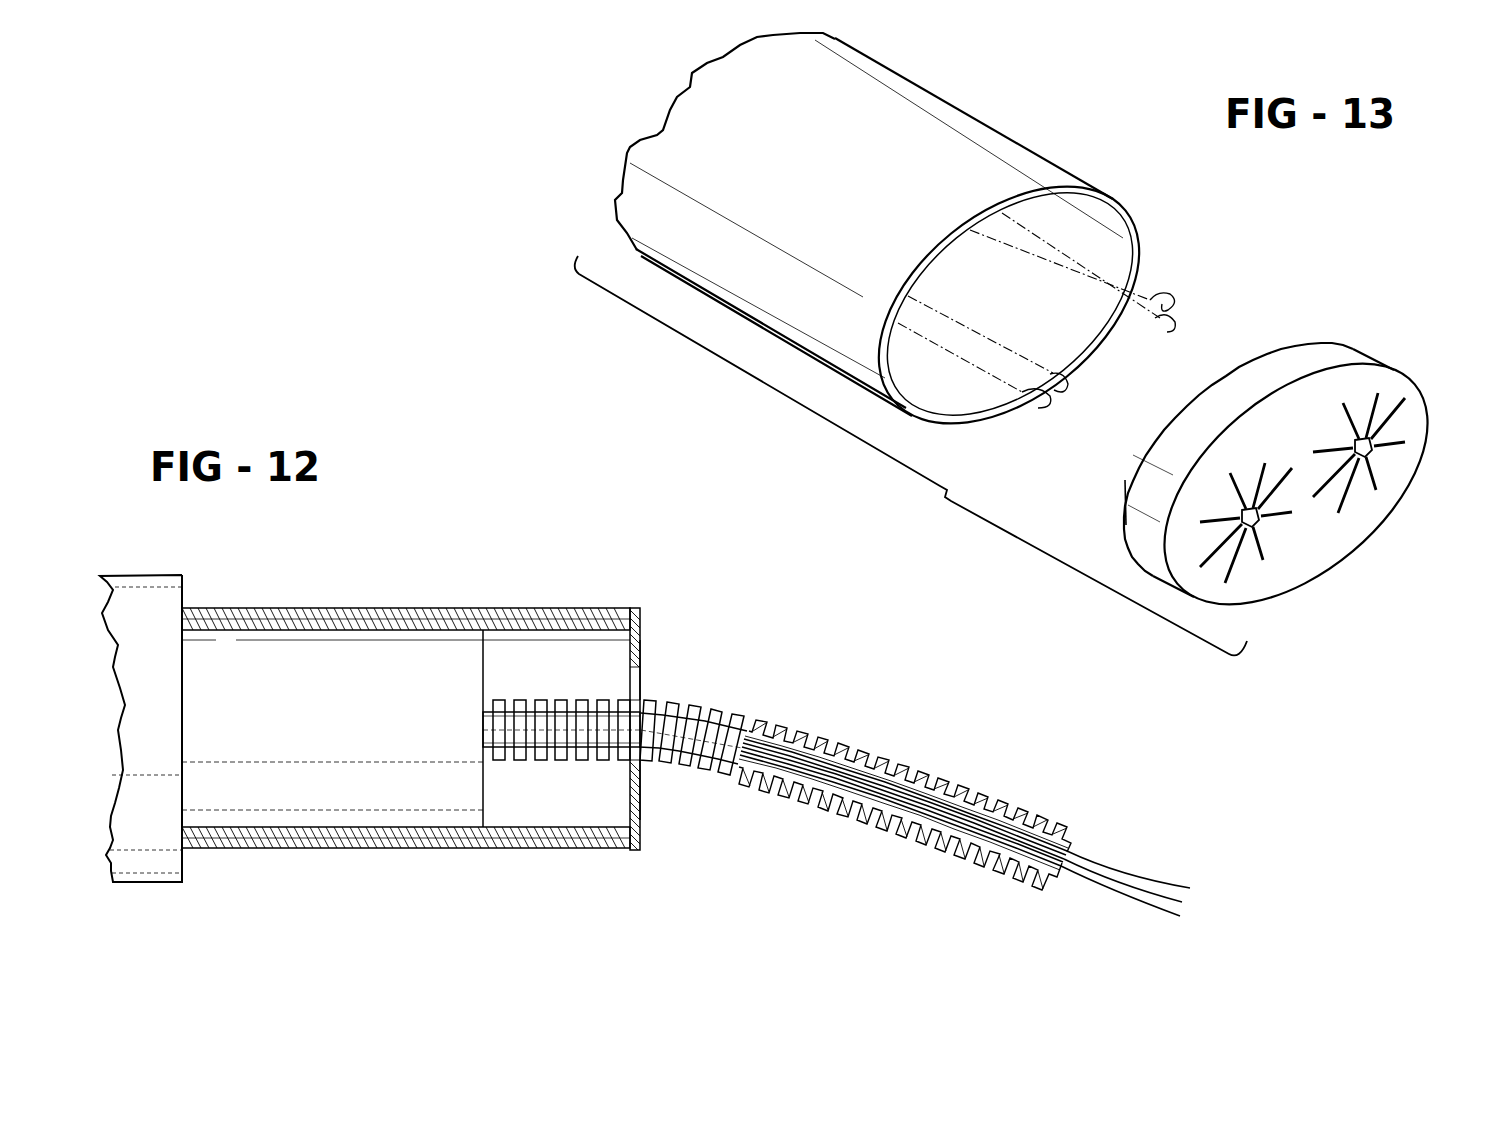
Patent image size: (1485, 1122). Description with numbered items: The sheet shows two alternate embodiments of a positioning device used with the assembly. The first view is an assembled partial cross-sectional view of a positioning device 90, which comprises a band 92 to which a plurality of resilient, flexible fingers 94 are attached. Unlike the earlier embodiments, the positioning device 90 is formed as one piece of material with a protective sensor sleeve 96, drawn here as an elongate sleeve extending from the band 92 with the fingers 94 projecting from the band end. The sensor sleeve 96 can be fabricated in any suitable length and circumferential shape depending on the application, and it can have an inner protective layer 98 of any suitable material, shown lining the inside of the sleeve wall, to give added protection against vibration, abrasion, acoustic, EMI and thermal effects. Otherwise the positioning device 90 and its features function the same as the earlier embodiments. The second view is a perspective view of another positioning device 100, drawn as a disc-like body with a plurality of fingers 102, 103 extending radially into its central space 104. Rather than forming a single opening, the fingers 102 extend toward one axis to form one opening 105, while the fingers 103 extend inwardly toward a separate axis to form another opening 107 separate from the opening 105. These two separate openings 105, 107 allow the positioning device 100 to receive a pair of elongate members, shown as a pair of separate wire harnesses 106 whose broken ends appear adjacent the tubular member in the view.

In FIG. 12, the positioning device 90 is at (573, 584).
In FIG. 12, the band 92 is at (637, 607).
In FIG. 12, the resilient, flexible fingers 94 is at (646, 653).
In FIG. 12, the protective sensor sleeve 96 is at (238, 607).
In FIG. 12, the inner protective layer 98 is at (286, 838).
In FIG. 13, the positioning device 100 is at (1385, 608).
In FIG. 13, the fingers 102 is at (1264, 505).
In FIG. 13, the fingers 103 is at (1356, 478).
In FIG. 13, the central space 104 is at (1255, 341).
In FIG. 13, the opening 105 is at (1366, 407).
In FIG. 13, the wire harnesses 106 is at (1170, 298).
In FIG. 13, the opening 107 is at (1126, 480).